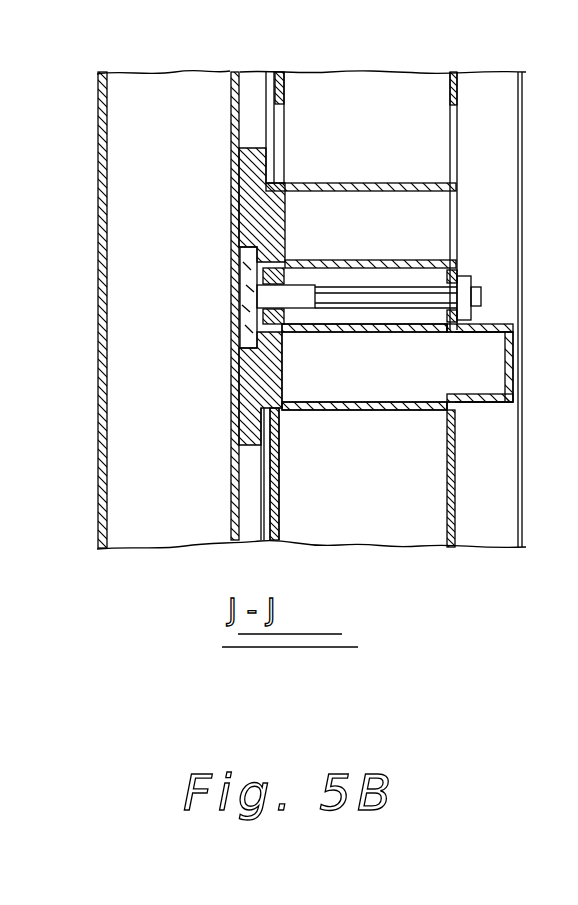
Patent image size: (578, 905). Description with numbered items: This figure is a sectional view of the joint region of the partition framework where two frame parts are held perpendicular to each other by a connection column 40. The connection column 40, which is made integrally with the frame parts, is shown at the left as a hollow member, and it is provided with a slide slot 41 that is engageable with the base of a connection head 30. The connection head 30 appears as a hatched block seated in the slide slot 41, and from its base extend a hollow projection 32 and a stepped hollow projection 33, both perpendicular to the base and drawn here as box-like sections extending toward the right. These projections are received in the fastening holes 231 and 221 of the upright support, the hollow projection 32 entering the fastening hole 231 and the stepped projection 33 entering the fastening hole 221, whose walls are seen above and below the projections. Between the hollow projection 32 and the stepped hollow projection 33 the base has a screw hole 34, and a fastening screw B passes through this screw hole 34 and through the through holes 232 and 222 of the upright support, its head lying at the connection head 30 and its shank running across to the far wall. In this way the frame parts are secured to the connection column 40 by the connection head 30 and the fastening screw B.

The connection column 40 is at (130, 244).
The slide slot 41 is at (254, 103).
The fastening hole 231 is at (282, 137).
The fastening hole 221 is at (452, 136).
The connection head 30 is at (250, 201).
The hollow projection 32 is at (363, 185).
The stepped hollow projection 33 is at (334, 410).
The screw hole 34 is at (246, 352).
The fastening screw B is at (239, 300).
The through hole 232 is at (296, 334).
The through hole 222 is at (448, 325).